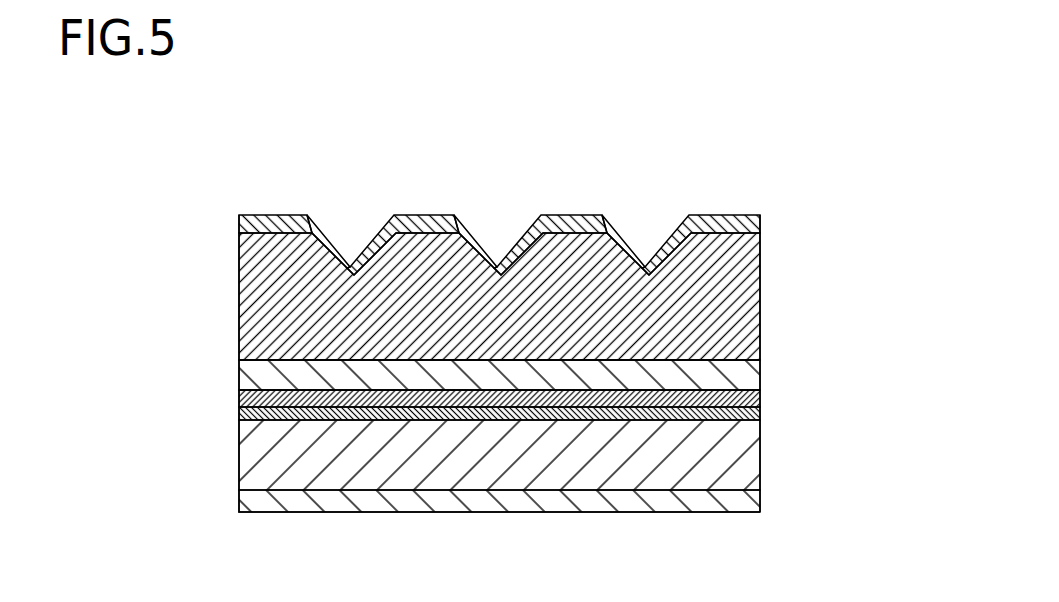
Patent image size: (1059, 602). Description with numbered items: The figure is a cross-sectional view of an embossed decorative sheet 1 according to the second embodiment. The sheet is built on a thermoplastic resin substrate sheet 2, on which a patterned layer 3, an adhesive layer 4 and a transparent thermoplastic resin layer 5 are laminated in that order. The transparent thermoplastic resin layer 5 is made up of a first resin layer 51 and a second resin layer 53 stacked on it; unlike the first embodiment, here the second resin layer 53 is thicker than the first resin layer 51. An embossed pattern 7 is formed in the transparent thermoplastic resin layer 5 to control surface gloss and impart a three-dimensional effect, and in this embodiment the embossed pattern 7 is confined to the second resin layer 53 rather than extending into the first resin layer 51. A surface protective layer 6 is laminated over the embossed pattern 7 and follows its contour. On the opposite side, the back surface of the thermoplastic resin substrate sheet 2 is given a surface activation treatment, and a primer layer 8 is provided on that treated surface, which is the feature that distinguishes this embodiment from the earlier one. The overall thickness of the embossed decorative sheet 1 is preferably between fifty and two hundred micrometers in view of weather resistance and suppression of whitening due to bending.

The embossed decorative sheet 1 is at (330, 156).
The thermoplastic resin substrate sheet 2 is at (755, 452).
The patterned layer 3 is at (757, 411).
The adhesive layer 4 is at (757, 398).
The transparent thermoplastic resin layer 5 is at (833, 283).
The first resin layer 51 is at (755, 373).
The second resin layer 53 is at (753, 305).
The surface protective layer 6 is at (760, 223).
The embossed pattern 7 is at (634, 248).
The primer layer 8 is at (755, 503).